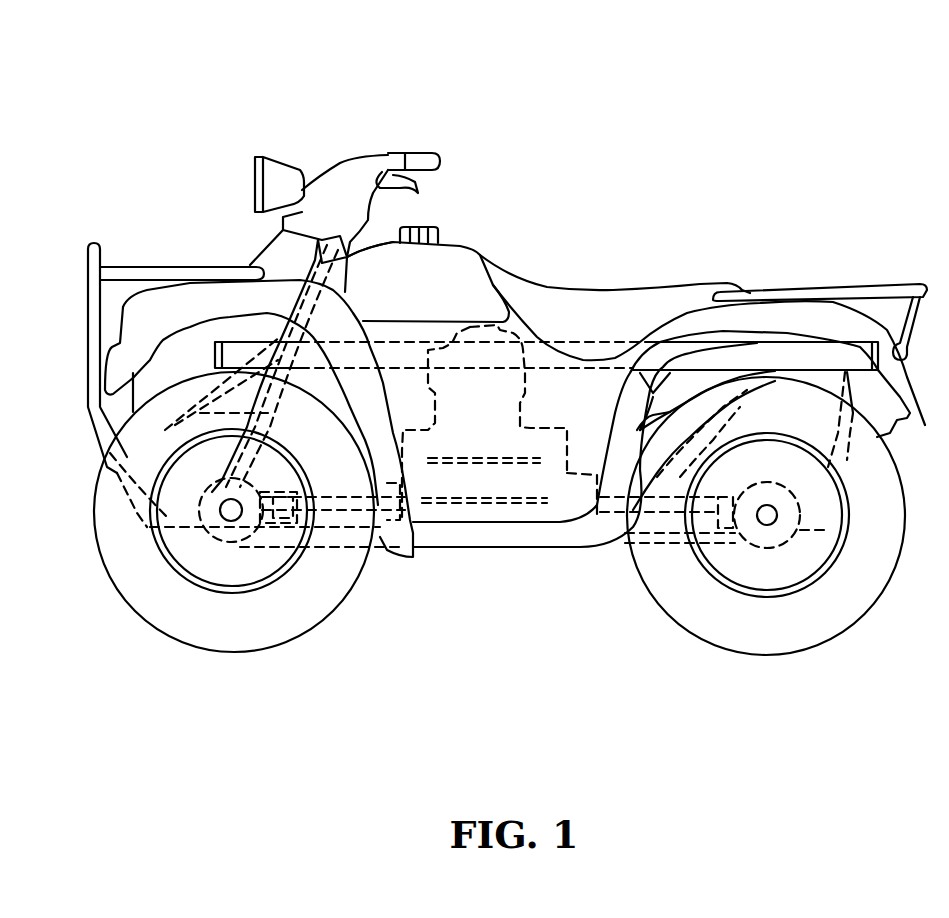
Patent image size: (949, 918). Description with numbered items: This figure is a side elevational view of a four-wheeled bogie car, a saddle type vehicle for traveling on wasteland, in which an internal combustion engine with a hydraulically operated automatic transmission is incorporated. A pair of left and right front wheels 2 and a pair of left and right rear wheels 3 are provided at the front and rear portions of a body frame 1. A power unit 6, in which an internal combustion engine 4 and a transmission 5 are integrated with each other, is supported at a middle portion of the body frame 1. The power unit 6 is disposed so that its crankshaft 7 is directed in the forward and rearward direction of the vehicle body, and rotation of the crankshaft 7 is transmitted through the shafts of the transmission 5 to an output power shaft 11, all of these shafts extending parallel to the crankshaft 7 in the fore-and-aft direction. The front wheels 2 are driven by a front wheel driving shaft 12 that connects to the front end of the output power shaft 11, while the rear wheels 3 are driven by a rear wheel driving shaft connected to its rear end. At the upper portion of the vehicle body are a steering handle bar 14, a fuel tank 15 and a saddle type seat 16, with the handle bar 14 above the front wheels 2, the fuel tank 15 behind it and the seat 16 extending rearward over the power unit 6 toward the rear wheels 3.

The body frame 1 is at (753, 358).
The front wheels 2 is at (212, 635).
The rear wheels 3 is at (785, 635).
The internal combustion engine 4 is at (470, 383).
The transmission 5 is at (553, 437).
The power unit 6 is at (562, 50).
The crankshaft 7 is at (460, 463).
The output power shaft 11 is at (518, 503).
The front wheel driving shaft 12 is at (325, 507).
The steering handle bar 14 is at (417, 153).
The fuel tank 15 is at (457, 256).
The saddle type seat 16 is at (665, 293).